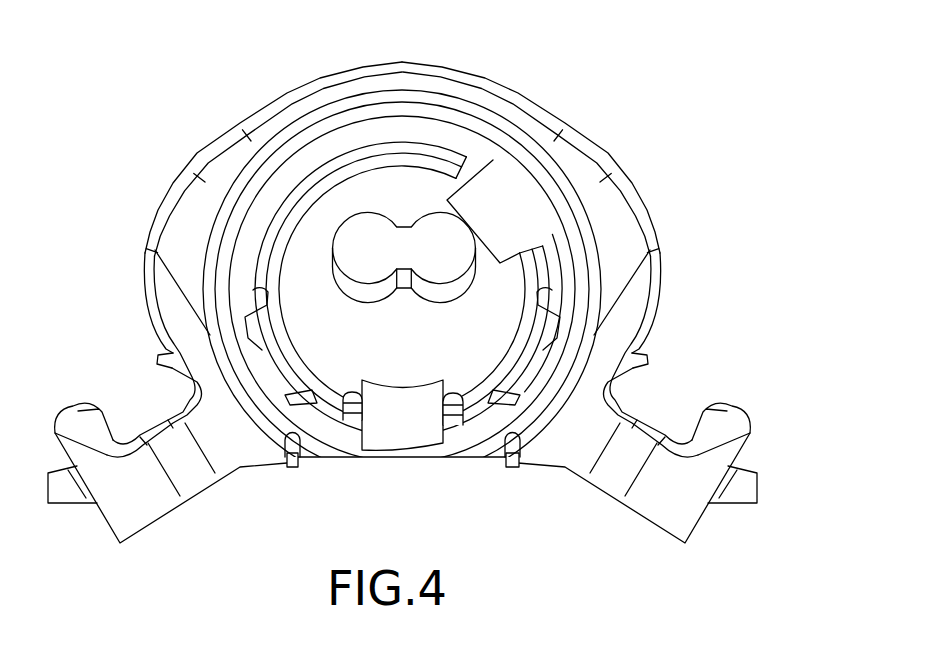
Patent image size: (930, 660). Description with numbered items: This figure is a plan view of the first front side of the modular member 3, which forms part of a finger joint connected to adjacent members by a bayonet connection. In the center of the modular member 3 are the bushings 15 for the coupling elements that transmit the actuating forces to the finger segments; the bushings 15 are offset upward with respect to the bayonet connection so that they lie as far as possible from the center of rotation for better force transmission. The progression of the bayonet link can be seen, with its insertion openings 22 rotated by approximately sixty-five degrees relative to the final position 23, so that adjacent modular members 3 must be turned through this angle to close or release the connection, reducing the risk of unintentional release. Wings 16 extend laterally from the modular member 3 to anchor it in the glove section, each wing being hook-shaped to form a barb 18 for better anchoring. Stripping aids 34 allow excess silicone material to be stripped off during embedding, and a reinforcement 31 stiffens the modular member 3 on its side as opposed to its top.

The modular member 3 is at (365, 87).
The reinforcement 31 is at (183, 232).
The stripping aid 34 is at (167, 362).
The wing 16 is at (133, 503).
The barb 18 is at (717, 433).
The insertion opening 22 is at (493, 203).
The bushing 15 is at (427, 265).
The final position 23 is at (272, 348).